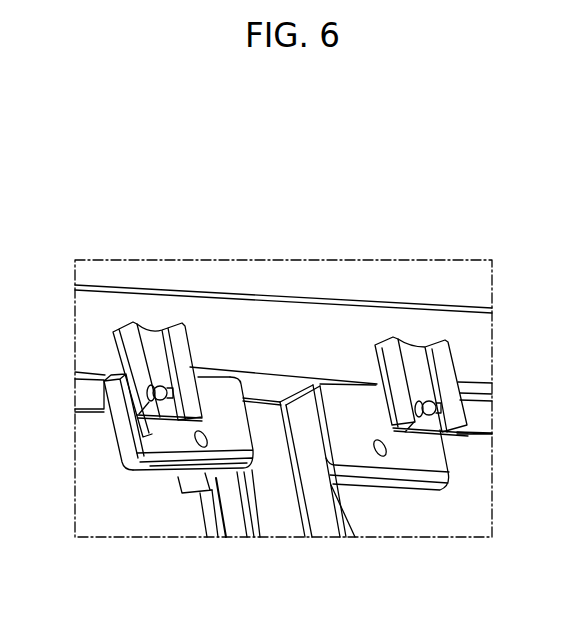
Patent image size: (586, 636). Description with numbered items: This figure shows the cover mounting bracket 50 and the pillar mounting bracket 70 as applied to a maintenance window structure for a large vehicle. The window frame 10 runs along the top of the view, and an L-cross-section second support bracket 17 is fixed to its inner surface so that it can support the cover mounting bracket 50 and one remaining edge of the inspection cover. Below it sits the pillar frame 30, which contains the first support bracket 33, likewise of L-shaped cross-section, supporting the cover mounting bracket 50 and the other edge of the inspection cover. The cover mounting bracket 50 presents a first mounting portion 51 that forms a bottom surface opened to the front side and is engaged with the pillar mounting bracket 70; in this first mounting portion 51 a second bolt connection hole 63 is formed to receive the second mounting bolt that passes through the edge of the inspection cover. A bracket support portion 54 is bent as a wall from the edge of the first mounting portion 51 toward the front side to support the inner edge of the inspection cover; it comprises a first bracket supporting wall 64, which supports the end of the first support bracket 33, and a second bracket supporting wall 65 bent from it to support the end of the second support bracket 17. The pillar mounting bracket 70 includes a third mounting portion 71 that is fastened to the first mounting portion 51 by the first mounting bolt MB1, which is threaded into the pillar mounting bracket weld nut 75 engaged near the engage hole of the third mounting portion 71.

The window frame 10 is at (386, 284).
The second support bracket 17 is at (102, 399).
The pillar frame 30 is at (262, 384).
The first support bracket 33 is at (207, 513).
The cover mounting bracket 50 is at (145, 491).
The first mounting portion 51 is at (213, 380).
The bracket support portion 54 is at (110, 575).
The second bolt connection hole 63 is at (202, 444).
The first bracket supporting wall 64 is at (150, 482).
The second bracket supporting wall 65 is at (120, 462).
The pillar mounting bracket 70 is at (99, 341).
The third mounting portion 71 is at (113, 332).
The pillar mounting bracket weld nut 75 is at (150, 407).
The first mounting bolt MB1 is at (158, 388).